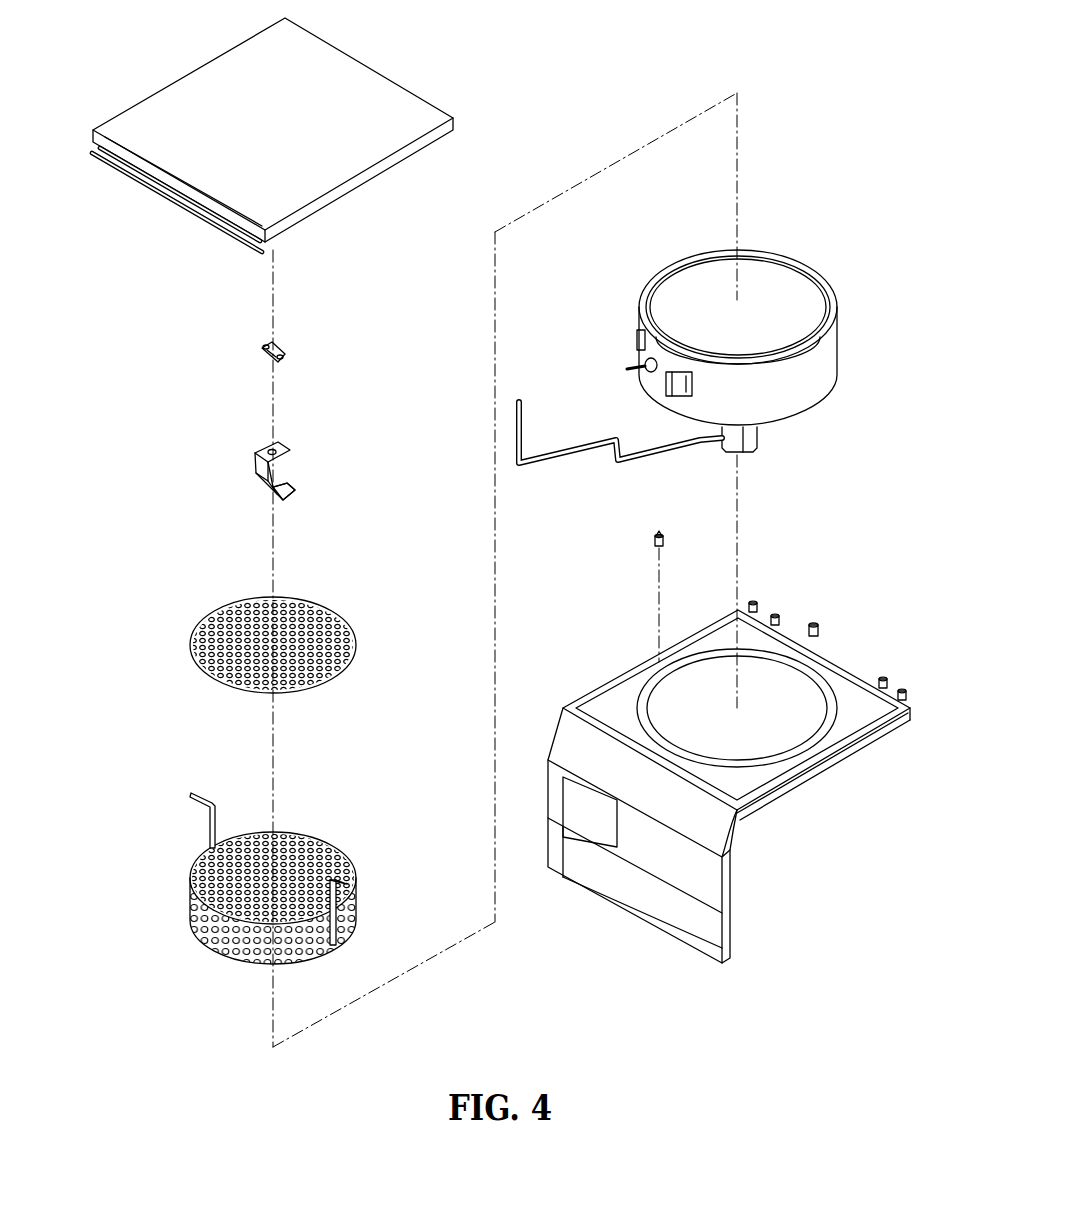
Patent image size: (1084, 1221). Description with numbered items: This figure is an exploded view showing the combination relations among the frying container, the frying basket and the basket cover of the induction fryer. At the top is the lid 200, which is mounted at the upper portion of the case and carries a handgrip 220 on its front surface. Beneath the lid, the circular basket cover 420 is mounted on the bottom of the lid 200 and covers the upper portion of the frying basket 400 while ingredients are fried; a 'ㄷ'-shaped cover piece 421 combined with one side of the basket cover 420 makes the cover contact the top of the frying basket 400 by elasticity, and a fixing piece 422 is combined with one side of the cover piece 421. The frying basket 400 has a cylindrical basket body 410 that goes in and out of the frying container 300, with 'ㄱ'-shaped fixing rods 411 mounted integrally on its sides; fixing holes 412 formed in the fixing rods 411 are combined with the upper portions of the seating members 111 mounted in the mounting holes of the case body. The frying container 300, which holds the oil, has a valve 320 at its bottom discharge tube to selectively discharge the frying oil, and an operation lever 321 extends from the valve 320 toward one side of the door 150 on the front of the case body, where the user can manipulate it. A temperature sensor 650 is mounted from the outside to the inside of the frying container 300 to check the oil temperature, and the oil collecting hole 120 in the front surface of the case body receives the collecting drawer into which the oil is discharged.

The lid 200 is at (210, 80).
The handgrip 220 is at (101, 158).
The frying basket 400 is at (423, 648).
The basket body 410 is at (293, 832).
The fixing rods 411 is at (331, 880).
The fixing holes 412 is at (355, 870).
The basket cover 420 is at (333, 607).
The cover piece 421 is at (255, 463).
The fixing piece 422 is at (277, 350).
The frying container 300 is at (817, 357).
The valve 320 is at (760, 437).
The operation lever 321 is at (640, 462).
The temperature sensor 650 is at (627, 370).
The seating members 111 is at (823, 622).
The oil collecting hole 120 is at (704, 785).
The door 150 is at (595, 818).